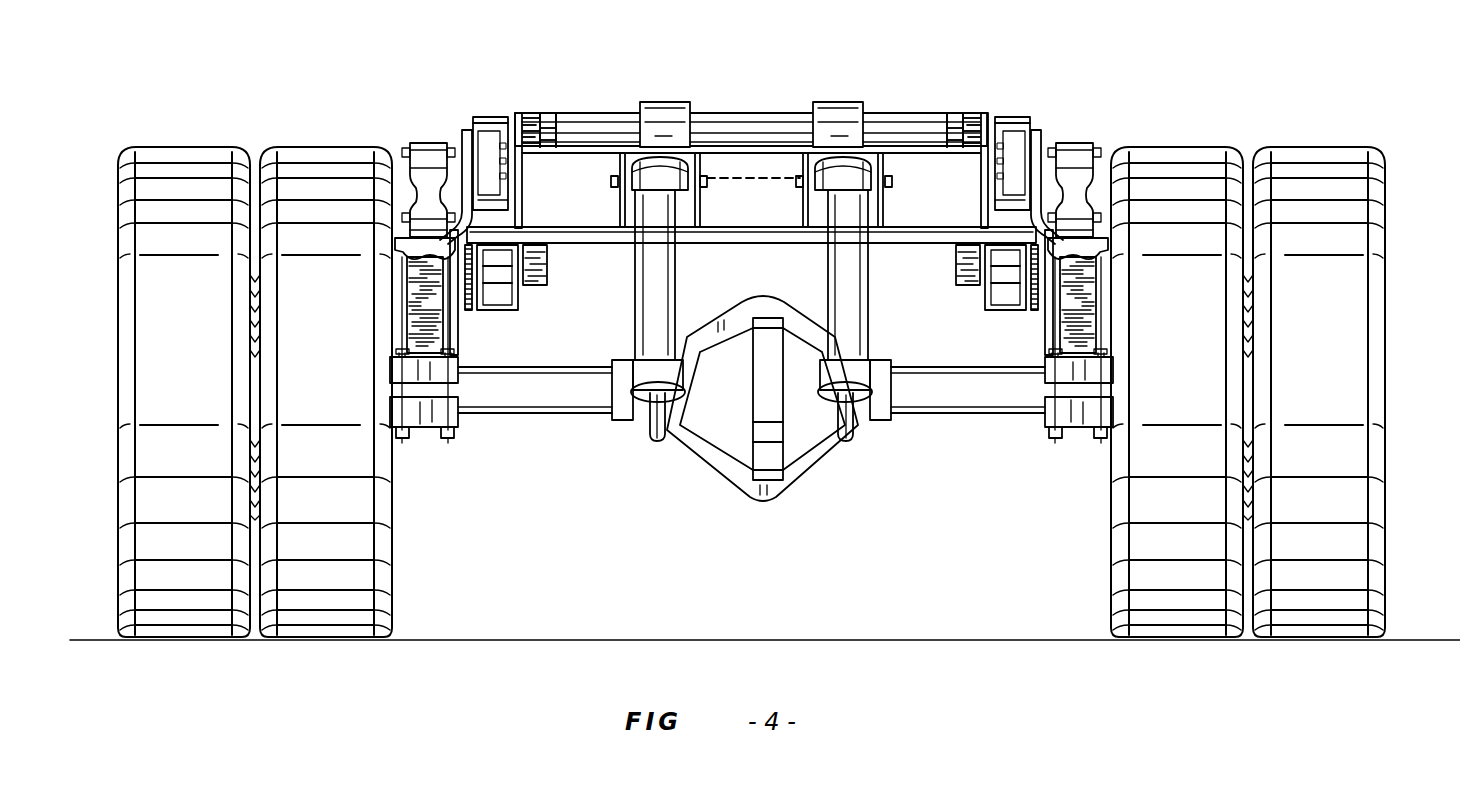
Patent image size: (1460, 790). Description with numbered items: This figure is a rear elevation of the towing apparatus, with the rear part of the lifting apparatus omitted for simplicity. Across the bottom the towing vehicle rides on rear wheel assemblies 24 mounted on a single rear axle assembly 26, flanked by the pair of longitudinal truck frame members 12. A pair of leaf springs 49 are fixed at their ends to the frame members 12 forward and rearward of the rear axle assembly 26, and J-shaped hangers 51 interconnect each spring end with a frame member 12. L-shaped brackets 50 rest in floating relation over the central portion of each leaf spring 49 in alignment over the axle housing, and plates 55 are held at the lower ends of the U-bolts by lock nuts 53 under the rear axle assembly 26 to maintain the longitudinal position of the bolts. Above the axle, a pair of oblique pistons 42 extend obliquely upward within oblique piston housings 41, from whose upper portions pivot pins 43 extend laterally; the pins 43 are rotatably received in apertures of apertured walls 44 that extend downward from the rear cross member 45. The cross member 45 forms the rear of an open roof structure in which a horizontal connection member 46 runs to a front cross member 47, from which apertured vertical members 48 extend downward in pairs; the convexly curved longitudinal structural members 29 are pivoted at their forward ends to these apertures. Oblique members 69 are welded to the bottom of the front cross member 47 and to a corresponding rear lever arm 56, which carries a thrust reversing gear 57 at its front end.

The longitudinal truck frame member 12 is at (490, 118).
The rear wheel assembly 24 is at (392, 578).
The rear axle assembly 26 is at (568, 400).
The longitudinal structural member 29 is at (663, 102).
The oblique piston housing 41 is at (690, 312).
The oblique piston 42 is at (650, 436).
The pivot pin 43 is at (613, 184).
The apertured wall 44 is at (616, 222).
The rear cross member 45 is at (930, 140).
The horizontal connection member 46 is at (756, 132).
The front cross member 47 is at (620, 125).
The apertured vertical member 48 is at (945, 140).
The leaf spring 49 is at (420, 322).
The L-shaped bracket 50 is at (460, 310).
The J-shaped hanger 51 is at (462, 142).
The lock nut 53 is at (450, 442).
The plate 55 is at (458, 413).
The rear lever arm 56 is at (505, 312).
The gear 57 is at (468, 312).
The oblique member 69 is at (545, 125).